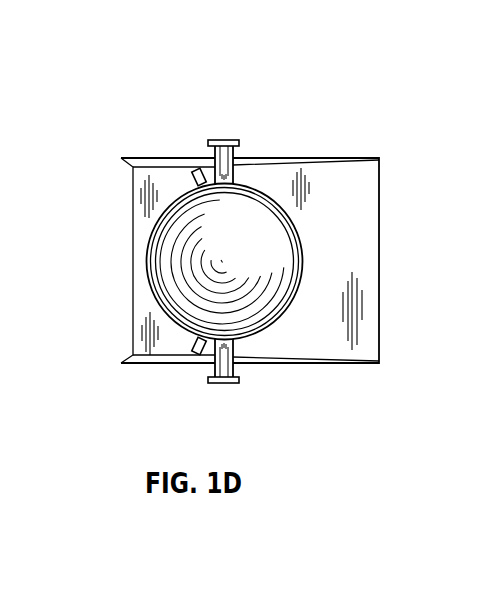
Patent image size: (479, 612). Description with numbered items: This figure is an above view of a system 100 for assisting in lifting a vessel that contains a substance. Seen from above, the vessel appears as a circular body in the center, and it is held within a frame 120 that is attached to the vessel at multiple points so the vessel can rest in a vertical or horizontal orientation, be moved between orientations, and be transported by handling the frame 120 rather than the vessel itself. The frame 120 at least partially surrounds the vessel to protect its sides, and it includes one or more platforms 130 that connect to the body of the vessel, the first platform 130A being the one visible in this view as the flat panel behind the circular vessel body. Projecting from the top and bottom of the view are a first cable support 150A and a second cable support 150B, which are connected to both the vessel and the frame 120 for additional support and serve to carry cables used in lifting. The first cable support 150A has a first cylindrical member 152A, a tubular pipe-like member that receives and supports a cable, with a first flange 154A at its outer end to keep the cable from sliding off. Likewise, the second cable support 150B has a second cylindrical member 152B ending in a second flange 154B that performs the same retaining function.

The system 100 is at (321, 58).
The frame 120 is at (122, 342).
The platform 130 is at (273, 242).
The first platform 130A is at (362, 190).
The first cable support 150A is at (238, 394).
The second cable support 150B is at (209, 131).
The first cylindrical member 152A is at (238, 373).
The second cylindrical member 152B is at (238, 150).
The first flange 154A is at (215, 386).
The second flange 154B is at (235, 141).